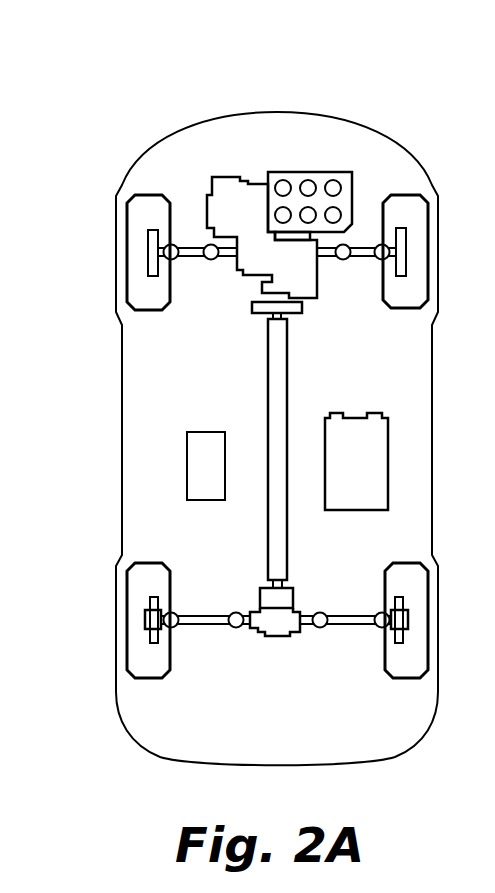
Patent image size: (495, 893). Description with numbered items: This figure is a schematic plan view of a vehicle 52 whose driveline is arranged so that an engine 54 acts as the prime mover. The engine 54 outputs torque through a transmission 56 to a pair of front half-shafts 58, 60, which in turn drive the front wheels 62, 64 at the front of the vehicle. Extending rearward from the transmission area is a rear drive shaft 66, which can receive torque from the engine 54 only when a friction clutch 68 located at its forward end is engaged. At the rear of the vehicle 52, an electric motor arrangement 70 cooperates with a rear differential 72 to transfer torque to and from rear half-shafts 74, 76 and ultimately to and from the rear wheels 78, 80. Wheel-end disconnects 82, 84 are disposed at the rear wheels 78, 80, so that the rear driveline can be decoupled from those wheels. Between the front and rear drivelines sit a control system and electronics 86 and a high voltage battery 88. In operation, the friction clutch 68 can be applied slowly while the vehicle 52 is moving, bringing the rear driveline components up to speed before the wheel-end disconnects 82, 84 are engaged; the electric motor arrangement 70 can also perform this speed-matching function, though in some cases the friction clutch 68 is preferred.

The vehicle 52 is at (128, 92).
The engine 54 is at (285, 170).
The transmission 56 is at (207, 195).
The front half-shaft 58 is at (188, 258).
The front half-shaft 60 is at (366, 261).
The front wheel 62 is at (147, 312).
The front wheel 64 is at (404, 310).
The rear drive shaft 66 is at (268, 550).
The friction clutch 68 is at (259, 315).
The electric motor arrangement 70 is at (295, 596).
The rear differential 72 is at (279, 638).
The rear half-shaft 74 is at (198, 628).
The rear half-shaft 76 is at (352, 628).
The rear wheel 78 is at (147, 562).
The rear wheel 80 is at (406, 562).
The wheel-end disconnect 82 is at (145, 620).
The wheel-end disconnect 84 is at (408, 620).
The control system and electronics 86 is at (208, 431).
The high voltage battery 88 is at (353, 417).